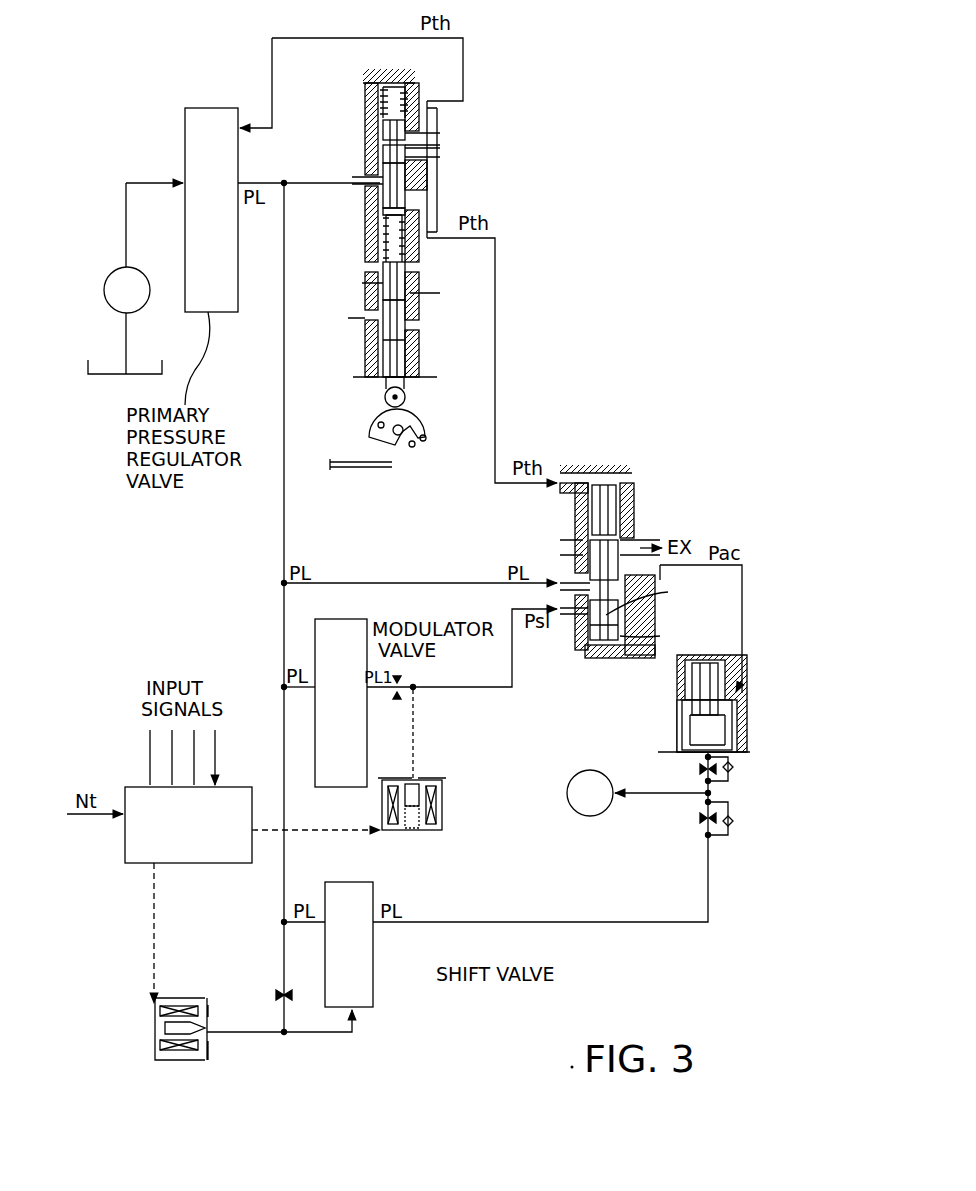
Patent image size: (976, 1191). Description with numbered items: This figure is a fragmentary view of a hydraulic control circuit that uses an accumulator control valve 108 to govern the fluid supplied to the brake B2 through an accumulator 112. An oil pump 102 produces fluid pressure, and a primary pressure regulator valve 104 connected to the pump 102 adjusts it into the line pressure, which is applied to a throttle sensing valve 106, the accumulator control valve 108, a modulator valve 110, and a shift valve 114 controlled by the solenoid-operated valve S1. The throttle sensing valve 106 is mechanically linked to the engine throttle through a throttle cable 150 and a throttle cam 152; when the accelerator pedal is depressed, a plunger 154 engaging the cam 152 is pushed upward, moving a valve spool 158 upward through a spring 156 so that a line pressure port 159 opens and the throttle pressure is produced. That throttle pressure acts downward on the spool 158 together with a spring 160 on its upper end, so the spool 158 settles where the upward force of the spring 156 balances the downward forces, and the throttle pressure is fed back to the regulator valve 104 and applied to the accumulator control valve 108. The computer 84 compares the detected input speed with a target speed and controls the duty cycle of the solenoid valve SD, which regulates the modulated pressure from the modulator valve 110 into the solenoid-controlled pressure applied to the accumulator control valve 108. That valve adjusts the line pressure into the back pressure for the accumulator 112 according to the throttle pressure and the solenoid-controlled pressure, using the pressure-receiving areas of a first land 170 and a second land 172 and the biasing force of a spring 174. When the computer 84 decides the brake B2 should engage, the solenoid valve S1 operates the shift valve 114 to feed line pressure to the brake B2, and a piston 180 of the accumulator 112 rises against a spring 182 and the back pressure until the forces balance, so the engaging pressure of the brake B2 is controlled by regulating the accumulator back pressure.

The computer 84 is at (205, 866).
The oil pump 102 is at (112, 277).
The primary pressure regulator valve 104 is at (213, 113).
The throttle sensing valve 106 is at (419, 297).
The accumulator control valve 108 is at (606, 537).
The modulator valve 110 is at (352, 621).
The accumulator 112 is at (673, 680).
The shift valve 114 is at (373, 970).
The throttle cable 150 is at (352, 470).
The throttle cam 152 is at (402, 468).
The plunger 154 is at (383, 358).
The spring 156 is at (380, 284).
The valve spool 158 is at (372, 200).
The line pressure port 159 is at (378, 178).
The spring 160 is at (380, 100).
The first land 170 is at (575, 582).
The second land 172 is at (585, 618).
The spring 174 is at (612, 497).
The piston 180 is at (686, 718).
The spring 182 is at (705, 661).
The brake B2 is at (592, 817).
The solenoid valve SD is at (412, 832).
The solenoid-operated valve S1 is at (148, 1035).